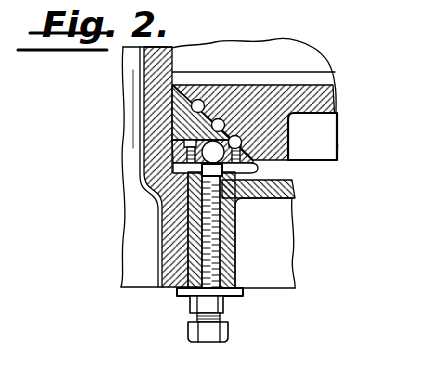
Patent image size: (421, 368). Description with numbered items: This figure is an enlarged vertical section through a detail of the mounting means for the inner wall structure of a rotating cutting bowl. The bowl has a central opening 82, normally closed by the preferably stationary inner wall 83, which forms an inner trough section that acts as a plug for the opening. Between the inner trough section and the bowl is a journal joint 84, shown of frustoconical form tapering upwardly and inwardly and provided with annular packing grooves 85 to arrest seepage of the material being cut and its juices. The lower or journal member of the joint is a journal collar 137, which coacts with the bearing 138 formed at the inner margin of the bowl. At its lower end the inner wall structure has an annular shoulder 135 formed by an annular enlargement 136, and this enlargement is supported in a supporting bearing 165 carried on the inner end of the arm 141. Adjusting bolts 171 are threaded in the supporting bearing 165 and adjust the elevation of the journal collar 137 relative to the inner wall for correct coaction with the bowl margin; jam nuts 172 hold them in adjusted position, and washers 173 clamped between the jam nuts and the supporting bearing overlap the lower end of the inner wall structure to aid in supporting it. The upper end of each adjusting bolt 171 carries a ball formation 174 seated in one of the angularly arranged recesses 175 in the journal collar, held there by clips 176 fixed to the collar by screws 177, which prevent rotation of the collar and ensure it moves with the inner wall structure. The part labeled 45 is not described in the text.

The body 45 is at (338, 97).
The central opening 82 is at (286, 136).
The inner wall 83 is at (128, 100).
The journal joint 84 is at (198, 99).
The annular packing grooves 85 is at (219, 118).
The annular shoulder 135 is at (155, 202).
The annular enlargement 136 is at (165, 288).
The journal collar 137 is at (178, 112).
The bearing 138 is at (238, 136).
The arm 141 is at (283, 213).
The supporting bearing 165 is at (228, 270).
The adjusting bolts 171 is at (212, 230).
The jam nuts 172 is at (222, 310).
The washers 173 is at (245, 293).
The ball formation 174 is at (172, 142).
The angularly arranged recesses 175 is at (186, 152).
The clips 176 is at (205, 160).
The screws 177 is at (246, 169).